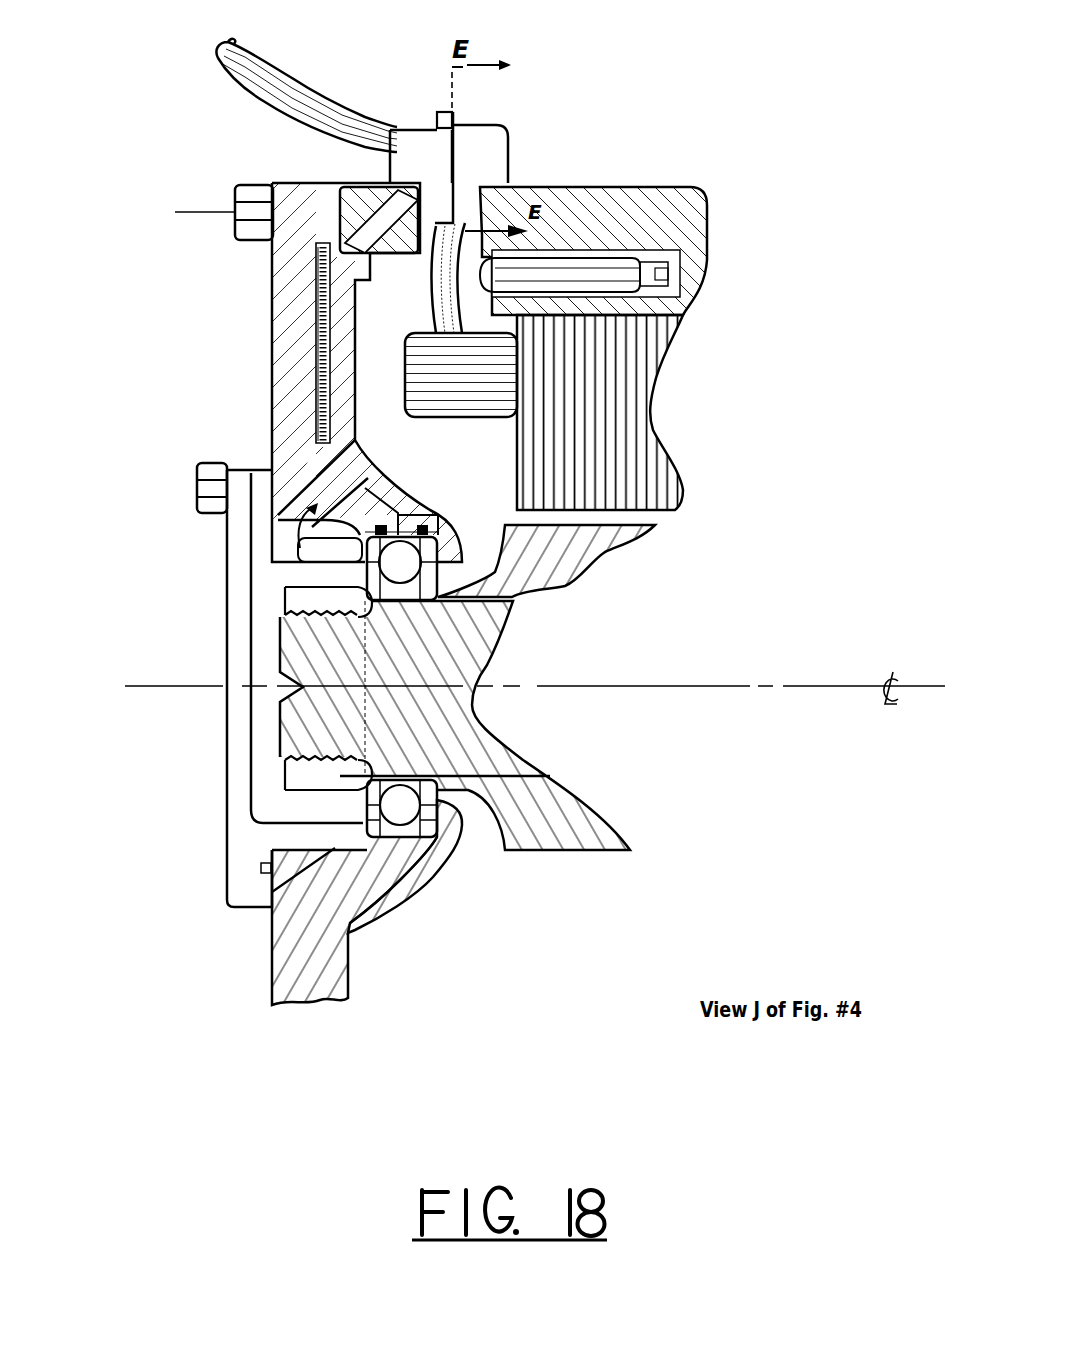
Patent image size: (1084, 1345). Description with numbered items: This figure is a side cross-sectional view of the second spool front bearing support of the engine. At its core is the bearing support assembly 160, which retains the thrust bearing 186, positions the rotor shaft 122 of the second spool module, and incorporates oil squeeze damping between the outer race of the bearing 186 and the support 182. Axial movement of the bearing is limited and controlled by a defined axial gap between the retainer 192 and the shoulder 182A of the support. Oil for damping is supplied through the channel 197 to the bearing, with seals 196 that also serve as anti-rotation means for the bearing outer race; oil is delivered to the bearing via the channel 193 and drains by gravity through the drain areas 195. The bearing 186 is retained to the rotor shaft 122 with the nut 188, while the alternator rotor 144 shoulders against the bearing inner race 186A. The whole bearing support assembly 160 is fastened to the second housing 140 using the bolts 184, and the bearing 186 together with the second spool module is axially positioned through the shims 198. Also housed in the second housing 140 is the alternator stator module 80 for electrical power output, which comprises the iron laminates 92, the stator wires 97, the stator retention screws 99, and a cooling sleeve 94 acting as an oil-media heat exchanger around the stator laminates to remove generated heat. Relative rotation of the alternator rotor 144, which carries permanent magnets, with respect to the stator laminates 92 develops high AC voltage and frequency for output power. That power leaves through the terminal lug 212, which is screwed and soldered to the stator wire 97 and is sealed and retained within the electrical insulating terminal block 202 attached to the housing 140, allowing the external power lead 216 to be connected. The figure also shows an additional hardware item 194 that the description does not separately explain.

The alternator stator module 80 is at (630, 327).
The iron laminates 92 is at (622, 413).
The cooling sleeve 94 is at (672, 238).
The stator wires 97 is at (458, 238).
The stator retention screws 99 is at (532, 262).
The rotor shaft 122 is at (467, 747).
The second housing 140 is at (643, 183).
The alternator rotor 144 is at (575, 552).
The bearing support assembly 160 is at (453, 865).
The support 182 is at (285, 310).
The shoulder 182A is at (463, 833).
The bolts 184 is at (240, 187).
The thrust bearing 186 is at (447, 822).
The bearing inner race 186A is at (318, 822).
The nut 188 is at (303, 603).
The retainer 192 is at (238, 781).
The channel 193 is at (425, 568).
The nut 194 is at (200, 480).
The gravity oil drain areas 195 is at (377, 400).
The seals 196 is at (328, 878).
The channel 197 is at (317, 332).
The shims 198 is at (337, 183).
The terminal block 202 is at (498, 145).
The terminal lug 212 is at (456, 115).
The external power lead 216 is at (272, 84).